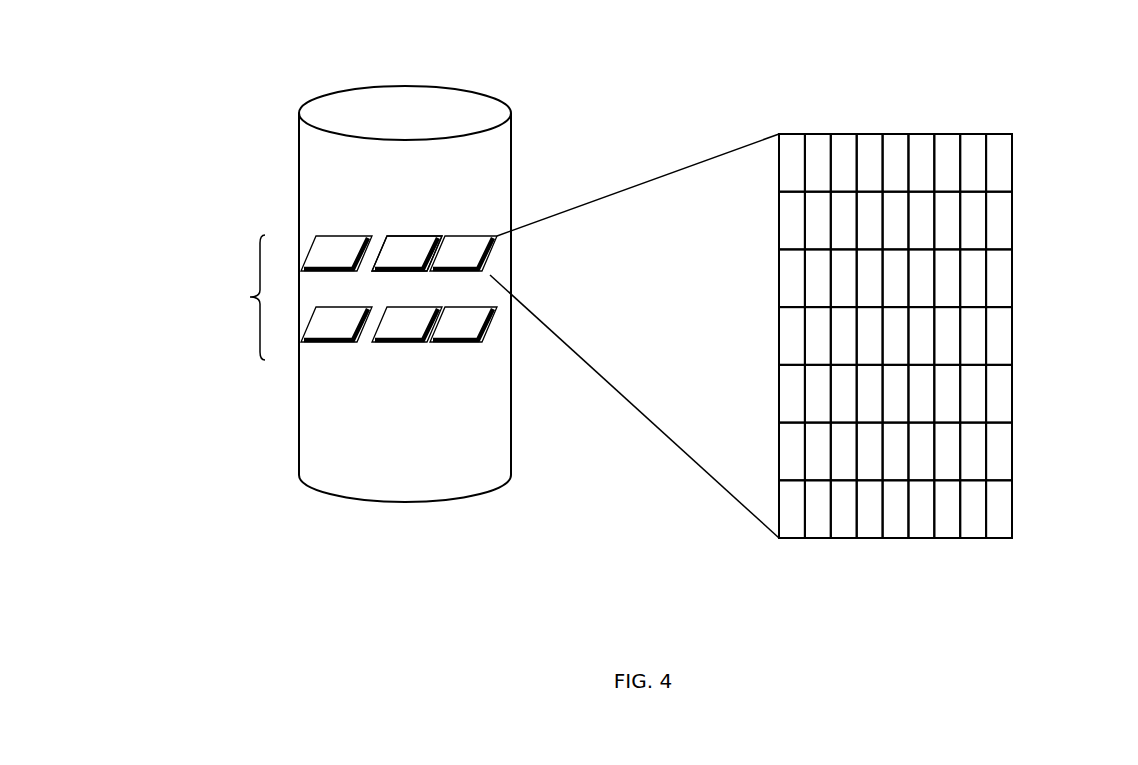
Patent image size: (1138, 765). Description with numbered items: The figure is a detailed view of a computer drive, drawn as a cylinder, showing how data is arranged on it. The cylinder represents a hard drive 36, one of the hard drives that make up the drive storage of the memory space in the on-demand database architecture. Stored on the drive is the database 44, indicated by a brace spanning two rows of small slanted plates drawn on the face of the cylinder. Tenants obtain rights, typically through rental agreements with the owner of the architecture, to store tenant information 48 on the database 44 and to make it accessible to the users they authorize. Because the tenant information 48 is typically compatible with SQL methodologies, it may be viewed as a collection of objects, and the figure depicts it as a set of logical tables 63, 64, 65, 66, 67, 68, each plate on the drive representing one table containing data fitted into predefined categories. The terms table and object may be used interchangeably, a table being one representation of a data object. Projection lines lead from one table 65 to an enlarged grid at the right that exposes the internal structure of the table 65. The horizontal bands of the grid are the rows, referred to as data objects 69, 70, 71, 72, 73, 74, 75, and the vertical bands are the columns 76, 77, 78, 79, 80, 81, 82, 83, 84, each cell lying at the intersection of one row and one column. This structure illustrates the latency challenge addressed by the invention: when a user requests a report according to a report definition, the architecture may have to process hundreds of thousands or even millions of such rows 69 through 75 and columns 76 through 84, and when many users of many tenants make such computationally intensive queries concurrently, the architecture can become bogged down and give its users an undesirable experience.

The hard drive 36 is at (404, 113).
The database 44 is at (232, 297).
The tenant information 48 is at (405, 233).
The logical table 63 is at (336, 253).
The logical table 64 is at (407, 253).
The logical table 65 is at (463, 253).
The logical table 66 is at (336, 324).
The logical table 67 is at (407, 324).
The logical table 68 is at (463, 324).
The data object 69 is at (1012, 162).
The data object 70 is at (779, 220).
The data object 71 is at (1012, 277).
The data object 72 is at (779, 333).
The data object 73 is at (1012, 390).
The data object 74 is at (779, 445).
The data object 75 is at (1012, 508).
The column 76 is at (793, 134).
The column 77 is at (816, 538).
The column 78 is at (845, 134).
The column 79 is at (868, 538).
The column 80 is at (897, 134).
The column 81 is at (920, 538).
The column 82 is at (942, 134).
The column 83 is at (972, 538).
The column 84 is at (998, 134).